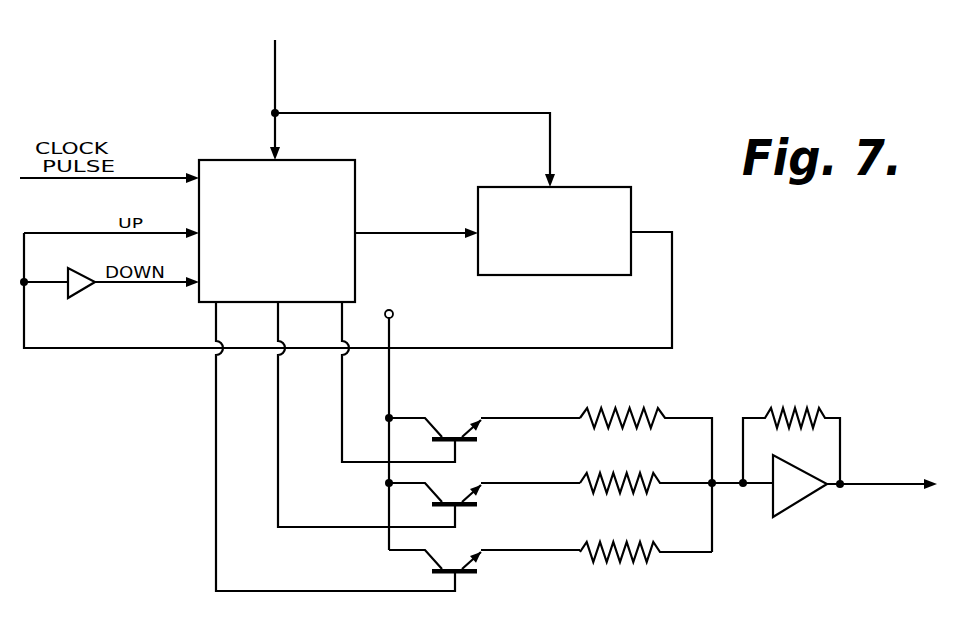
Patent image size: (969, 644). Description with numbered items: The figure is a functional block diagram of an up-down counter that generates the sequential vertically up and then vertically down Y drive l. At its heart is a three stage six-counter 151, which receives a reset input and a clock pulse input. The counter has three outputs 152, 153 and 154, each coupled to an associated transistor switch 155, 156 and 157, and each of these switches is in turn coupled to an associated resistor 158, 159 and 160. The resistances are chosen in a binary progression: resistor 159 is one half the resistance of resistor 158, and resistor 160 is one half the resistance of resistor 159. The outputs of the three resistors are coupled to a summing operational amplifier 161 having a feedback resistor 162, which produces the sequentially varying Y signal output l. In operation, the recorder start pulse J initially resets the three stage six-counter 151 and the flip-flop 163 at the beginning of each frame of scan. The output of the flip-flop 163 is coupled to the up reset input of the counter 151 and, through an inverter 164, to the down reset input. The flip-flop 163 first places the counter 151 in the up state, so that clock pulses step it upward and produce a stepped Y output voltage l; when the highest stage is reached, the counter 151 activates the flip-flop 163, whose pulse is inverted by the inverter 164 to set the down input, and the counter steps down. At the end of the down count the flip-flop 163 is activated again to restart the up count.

The three stage six-counter 151 is at (347, 177).
The counter output 152 is at (342, 430).
The counter output 153 is at (278, 470).
The counter output 154 is at (216, 556).
The transistor switch 155 is at (448, 437).
The transistor switch 156 is at (452, 503).
The transistor switch 157 is at (465, 574).
The resistor 158 is at (640, 410).
The resistor 159 is at (642, 490).
The resistor 160 is at (632, 562).
The summing operational amplifier 161 is at (803, 500).
The feedback resistor 162 is at (803, 410).
The flip-flop 163 is at (632, 198).
The inverter 164 is at (80, 293).
The recorder start pulse J is at (275, 75).
The Y drive l is at (882, 484).